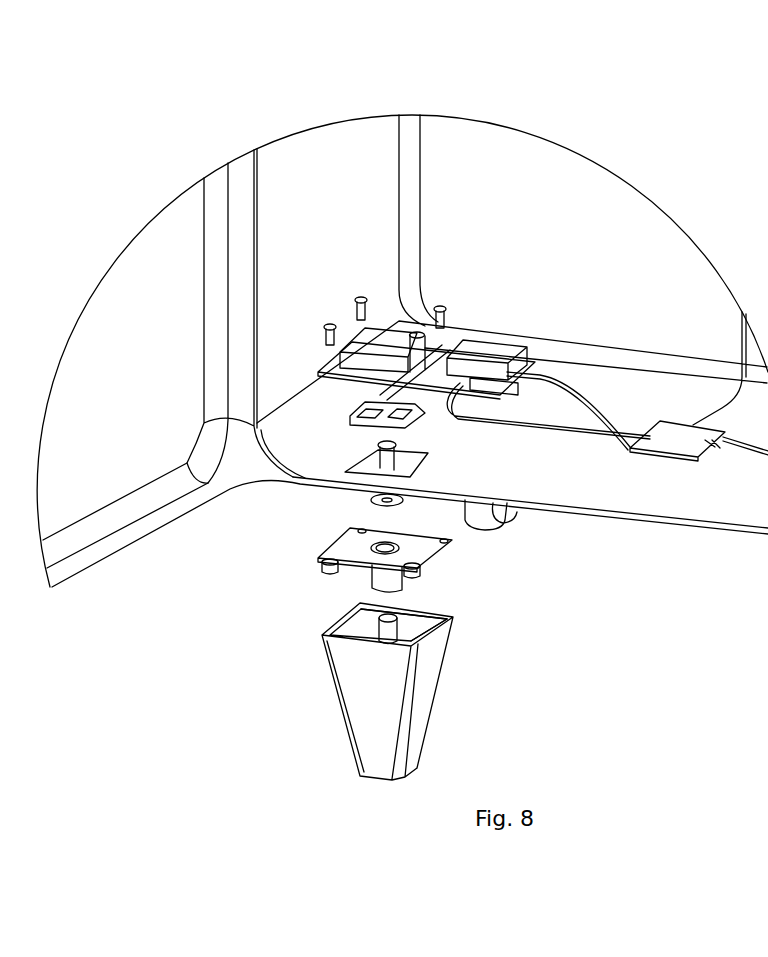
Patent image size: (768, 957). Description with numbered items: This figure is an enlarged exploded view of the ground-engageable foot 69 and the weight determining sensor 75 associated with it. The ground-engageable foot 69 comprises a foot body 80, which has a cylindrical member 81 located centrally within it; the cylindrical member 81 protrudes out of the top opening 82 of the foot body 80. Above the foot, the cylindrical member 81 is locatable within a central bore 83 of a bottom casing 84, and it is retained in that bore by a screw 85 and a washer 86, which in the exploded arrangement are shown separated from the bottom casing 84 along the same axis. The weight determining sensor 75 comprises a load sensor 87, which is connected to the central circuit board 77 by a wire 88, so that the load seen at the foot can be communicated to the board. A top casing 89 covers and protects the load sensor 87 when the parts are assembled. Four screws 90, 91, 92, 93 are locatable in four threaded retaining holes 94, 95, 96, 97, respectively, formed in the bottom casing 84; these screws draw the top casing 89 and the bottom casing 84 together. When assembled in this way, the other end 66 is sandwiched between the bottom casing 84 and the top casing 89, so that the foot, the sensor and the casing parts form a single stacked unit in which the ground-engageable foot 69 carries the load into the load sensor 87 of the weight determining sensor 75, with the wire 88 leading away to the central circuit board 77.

The other end 66 is at (647, 503).
The ground-engageable foot 69 is at (349, 680).
The weight determining sensor 75 is at (347, 342).
The central circuit board 77 is at (678, 443).
The foot body 80 is at (363, 725).
The cylindrical member 81 is at (390, 630).
The top opening 82 is at (368, 648).
The central bore 83 is at (414, 647).
The bottom casing 84 is at (350, 553).
The screw 85 is at (362, 423).
The washer 86 is at (370, 502).
The load sensor 87 is at (417, 413).
The wire 88 is at (591, 420).
The top casing 89 is at (395, 332).
The screw 90 is at (320, 332).
The screw 91 is at (362, 347).
The screw 92 is at (441, 327).
The screw 93 is at (451, 331).
The threaded retaining hole 94 is at (330, 562).
The threaded retaining hole 95 is at (362, 531).
The threaded retaining hole 96 is at (447, 542).
The threaded retaining hole 97 is at (422, 578).